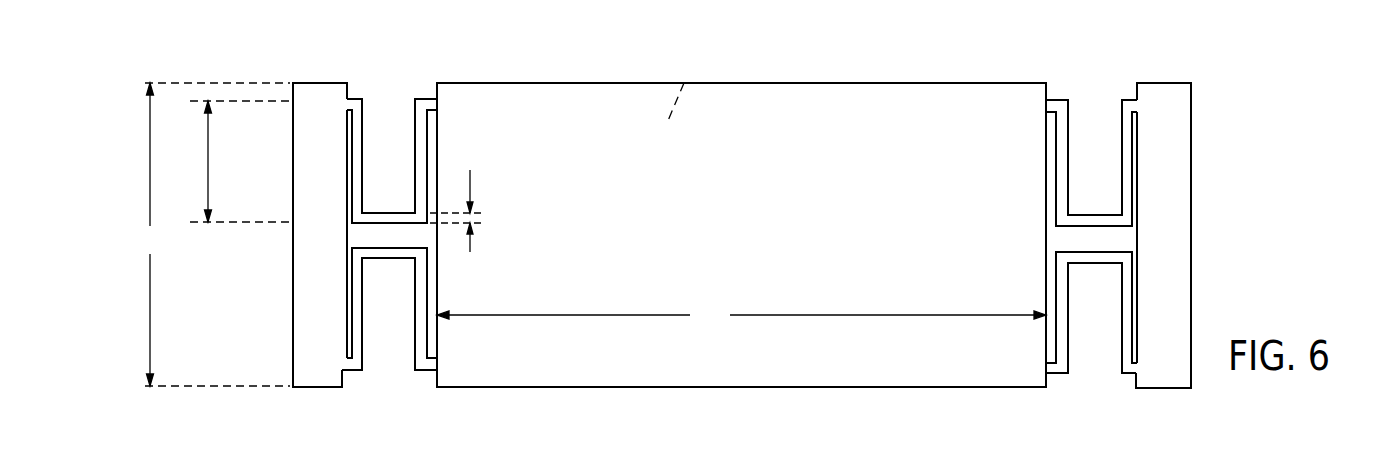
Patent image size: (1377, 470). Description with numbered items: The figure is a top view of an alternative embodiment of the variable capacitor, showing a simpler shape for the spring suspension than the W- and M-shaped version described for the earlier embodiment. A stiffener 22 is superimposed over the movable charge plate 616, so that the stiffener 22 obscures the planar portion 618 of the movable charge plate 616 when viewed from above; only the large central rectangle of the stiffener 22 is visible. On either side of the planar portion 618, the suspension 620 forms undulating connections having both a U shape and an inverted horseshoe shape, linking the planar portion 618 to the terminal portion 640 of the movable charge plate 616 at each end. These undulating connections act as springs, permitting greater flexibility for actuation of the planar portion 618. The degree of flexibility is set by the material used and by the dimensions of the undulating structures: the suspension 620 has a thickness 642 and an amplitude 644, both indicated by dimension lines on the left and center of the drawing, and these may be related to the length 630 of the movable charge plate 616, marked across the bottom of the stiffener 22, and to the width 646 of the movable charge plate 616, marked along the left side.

The stiffener 22 is at (729, 247).
The movable charge plate 616 is at (833, 63).
The planar portion 618 is at (684, 83).
The suspension 620 is at (358, 125).
The length 630 is at (741, 316).
The terminal portion 640 is at (313, 92).
The thickness 642 is at (472, 183).
The amplitude 644 is at (240, 161).
The width 646 is at (211, 234).